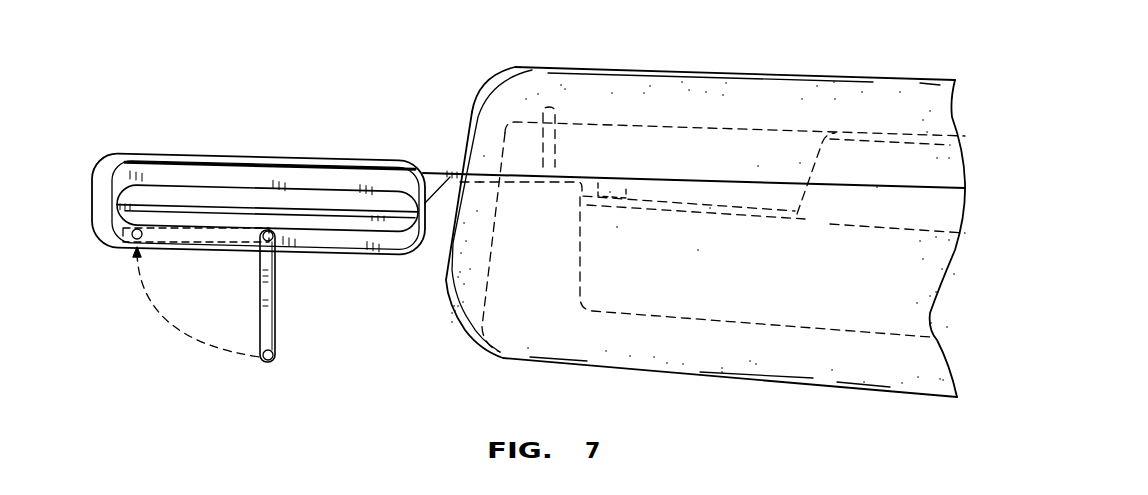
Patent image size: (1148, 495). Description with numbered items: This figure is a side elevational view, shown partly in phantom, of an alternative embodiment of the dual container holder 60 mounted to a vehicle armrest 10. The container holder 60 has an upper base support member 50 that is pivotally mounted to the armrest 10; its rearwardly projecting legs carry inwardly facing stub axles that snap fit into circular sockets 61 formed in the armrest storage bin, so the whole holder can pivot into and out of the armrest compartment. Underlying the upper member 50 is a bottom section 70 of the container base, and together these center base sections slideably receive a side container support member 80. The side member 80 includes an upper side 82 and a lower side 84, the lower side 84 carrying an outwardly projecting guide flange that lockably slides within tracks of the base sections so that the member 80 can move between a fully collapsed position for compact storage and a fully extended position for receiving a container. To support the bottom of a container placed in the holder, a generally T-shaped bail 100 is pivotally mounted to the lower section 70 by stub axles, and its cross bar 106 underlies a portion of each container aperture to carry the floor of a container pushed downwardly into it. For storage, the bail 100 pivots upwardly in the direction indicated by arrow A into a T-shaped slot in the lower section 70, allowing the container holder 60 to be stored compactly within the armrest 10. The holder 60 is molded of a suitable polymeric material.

The armrest 10 is at (468, 95).
The upper base support member 50 is at (292, 162).
The container holder 60 is at (278, 155).
The circular sockets 61 is at (600, 217).
The bottom section 70 is at (310, 257).
The side container support member 80 is at (372, 202).
The upper side 82 is at (210, 190).
The lower side 84 is at (210, 217).
The T-shaped bail 100 is at (277, 308).
The cross bar 106 is at (274, 356).
The arrow A is at (213, 350).